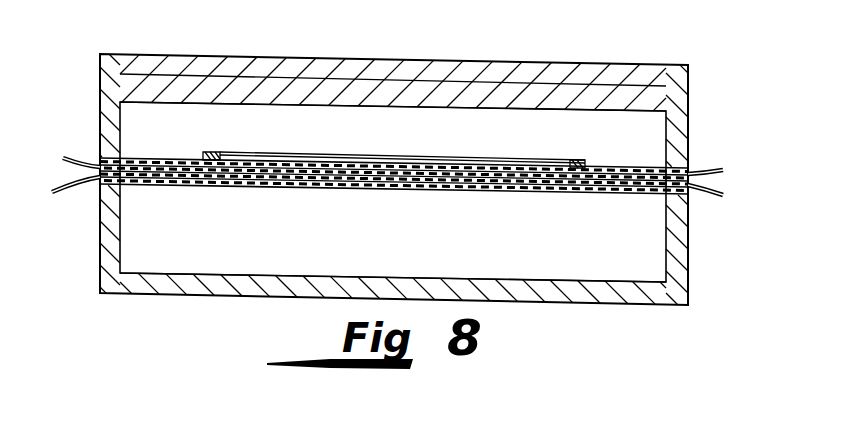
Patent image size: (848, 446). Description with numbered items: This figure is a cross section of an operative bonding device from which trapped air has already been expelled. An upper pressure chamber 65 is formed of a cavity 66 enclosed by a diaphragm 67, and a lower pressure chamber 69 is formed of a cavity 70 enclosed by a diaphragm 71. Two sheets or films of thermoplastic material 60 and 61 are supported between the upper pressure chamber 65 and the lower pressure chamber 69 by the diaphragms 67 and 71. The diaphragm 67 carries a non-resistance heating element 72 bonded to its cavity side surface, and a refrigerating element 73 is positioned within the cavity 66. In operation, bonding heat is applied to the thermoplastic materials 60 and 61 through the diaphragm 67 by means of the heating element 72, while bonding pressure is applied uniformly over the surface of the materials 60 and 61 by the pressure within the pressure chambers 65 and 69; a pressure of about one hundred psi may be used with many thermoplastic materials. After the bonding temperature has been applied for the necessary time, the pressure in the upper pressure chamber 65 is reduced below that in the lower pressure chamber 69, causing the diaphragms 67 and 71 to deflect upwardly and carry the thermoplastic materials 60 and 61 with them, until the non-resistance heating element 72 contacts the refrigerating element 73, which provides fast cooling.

The sheet of thermoplastic material 60 is at (84, 160).
The sheet of thermoplastic material 61 is at (378, 200).
The upper pressure chamber 65 is at (402, 55).
The cavity 66 is at (547, 143).
The diaphragm 67 is at (620, 169).
The lower pressure chamber 69 is at (446, 179).
The cavity 70 is at (410, 243).
The diaphragm 71 is at (290, 197).
The non-resistance heating element 72 is at (212, 153).
The refrigerating element 73 is at (393, 106).